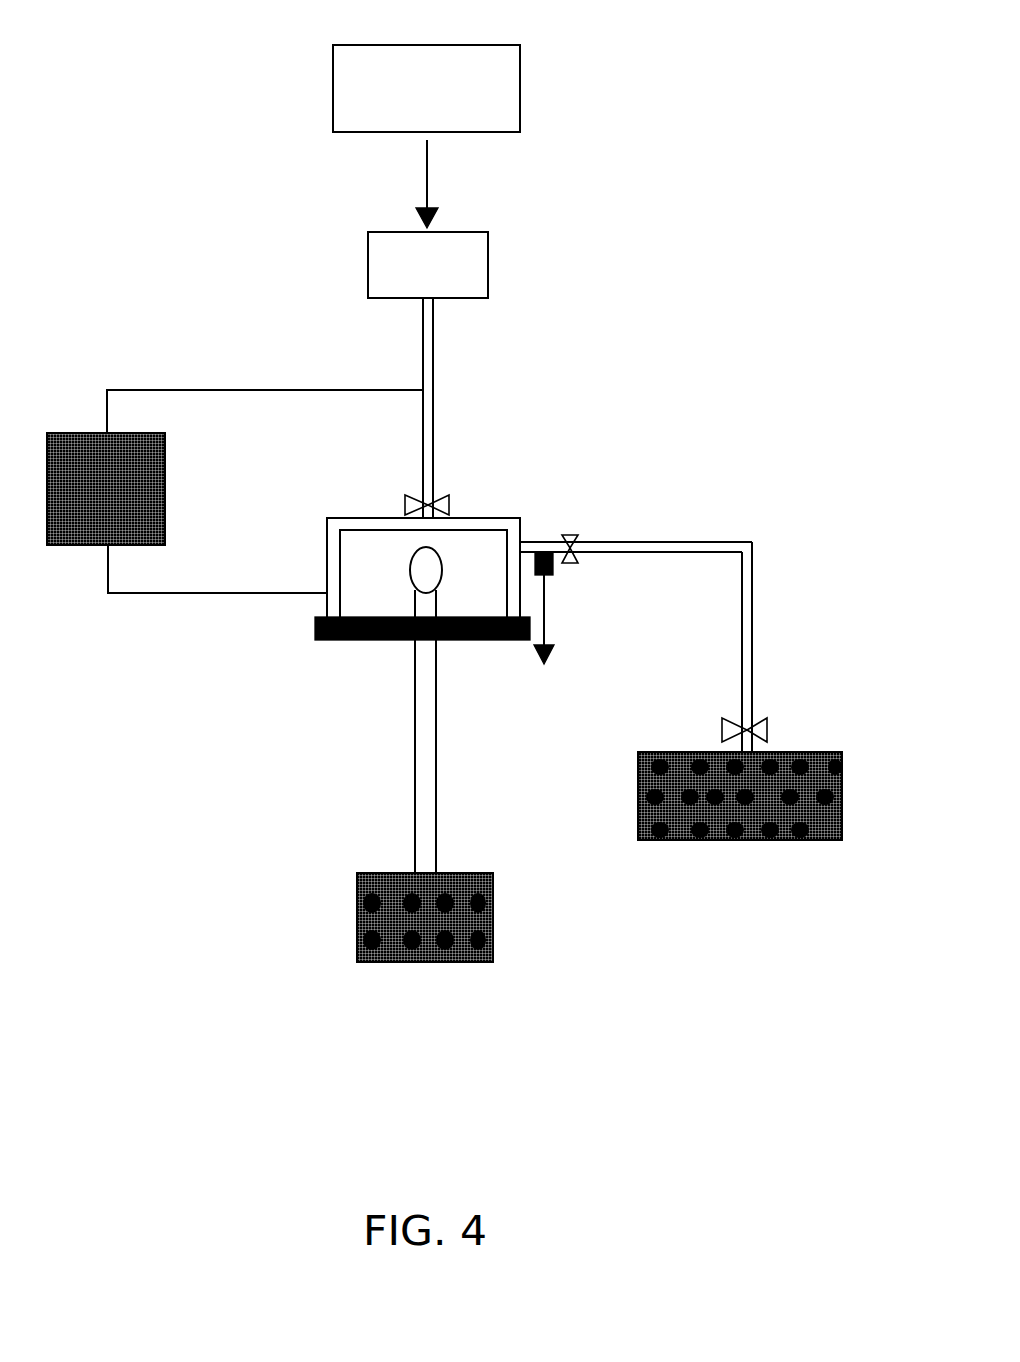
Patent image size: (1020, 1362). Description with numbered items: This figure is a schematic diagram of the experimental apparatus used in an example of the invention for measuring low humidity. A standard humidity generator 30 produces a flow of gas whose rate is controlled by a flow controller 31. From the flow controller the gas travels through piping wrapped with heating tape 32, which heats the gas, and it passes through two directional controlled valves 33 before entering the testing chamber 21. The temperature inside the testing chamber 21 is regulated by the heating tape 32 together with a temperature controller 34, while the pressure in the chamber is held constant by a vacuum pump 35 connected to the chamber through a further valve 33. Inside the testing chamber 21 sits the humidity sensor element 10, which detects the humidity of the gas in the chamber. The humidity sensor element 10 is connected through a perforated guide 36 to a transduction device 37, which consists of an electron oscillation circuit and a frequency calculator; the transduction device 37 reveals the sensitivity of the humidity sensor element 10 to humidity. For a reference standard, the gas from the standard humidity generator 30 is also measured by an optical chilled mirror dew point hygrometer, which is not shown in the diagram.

The humidity sensor element 10 is at (420, 560).
The testing chamber 21 is at (360, 562).
The standard humidity generator 30 is at (488, 100).
The flow controller 31 is at (463, 277).
The heating tape 32 is at (428, 360).
The directional controlled valve 33 is at (443, 495).
The temperature controller 34 is at (90, 528).
The vacuum pump 35 is at (827, 798).
The perforated guide 36 is at (365, 640).
The transduction device 37 is at (477, 920).